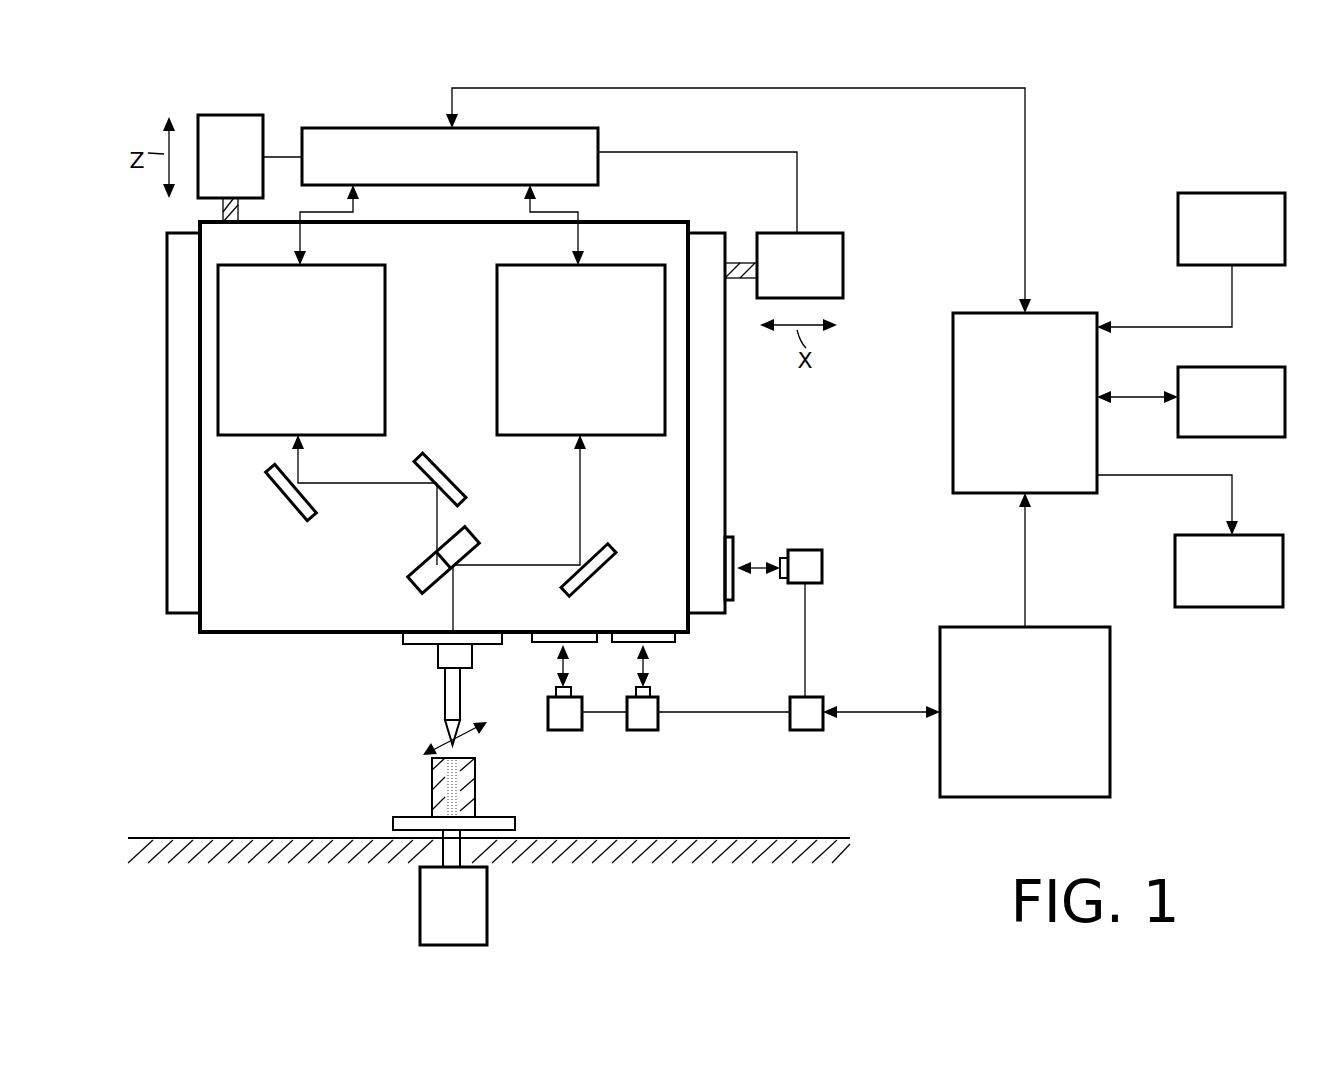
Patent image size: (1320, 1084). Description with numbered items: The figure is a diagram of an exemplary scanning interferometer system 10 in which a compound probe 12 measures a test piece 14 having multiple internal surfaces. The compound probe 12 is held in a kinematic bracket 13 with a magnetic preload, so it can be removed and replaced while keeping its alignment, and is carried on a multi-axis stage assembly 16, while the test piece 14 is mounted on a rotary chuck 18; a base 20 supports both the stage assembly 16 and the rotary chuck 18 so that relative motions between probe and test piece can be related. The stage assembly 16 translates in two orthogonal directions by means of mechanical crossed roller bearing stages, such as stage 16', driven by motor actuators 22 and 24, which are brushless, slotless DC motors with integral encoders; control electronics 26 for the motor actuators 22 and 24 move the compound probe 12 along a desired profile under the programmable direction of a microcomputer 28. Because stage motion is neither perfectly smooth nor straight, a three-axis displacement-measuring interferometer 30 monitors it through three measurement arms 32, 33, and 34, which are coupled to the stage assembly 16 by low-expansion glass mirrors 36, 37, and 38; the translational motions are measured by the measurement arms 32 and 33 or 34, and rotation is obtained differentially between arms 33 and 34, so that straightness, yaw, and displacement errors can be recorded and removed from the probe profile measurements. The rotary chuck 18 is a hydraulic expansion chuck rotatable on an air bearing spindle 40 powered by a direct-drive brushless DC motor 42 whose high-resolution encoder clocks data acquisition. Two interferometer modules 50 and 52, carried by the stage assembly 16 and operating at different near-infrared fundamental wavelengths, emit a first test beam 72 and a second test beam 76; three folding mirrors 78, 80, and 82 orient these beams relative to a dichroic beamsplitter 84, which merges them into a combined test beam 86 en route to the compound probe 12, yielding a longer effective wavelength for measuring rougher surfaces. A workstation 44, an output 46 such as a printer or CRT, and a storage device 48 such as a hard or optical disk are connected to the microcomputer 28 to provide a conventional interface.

The scanning interferometer system 10 is at (1145, 178).
The compound probe 12 is at (445, 703).
The kinematic bracket 13 is at (438, 660).
The test piece 14 is at (475, 790).
The multi-axis stage assembly 16 is at (444, 427).
The crossed roller bearing stage 16' is at (754, 423).
The rotary chuck 18 is at (393, 822).
The base 20 is at (255, 838).
The motor actuator 22 is at (785, 278).
The motor actuator 24 is at (215, 177).
The control electronics 26 is at (437, 169).
The microcomputer 28 is at (1005, 421).
The three-axis displacement-measuring interferometer 30 is at (1007, 724).
The measurement arm 32 is at (822, 570).
The measurement arm 33 is at (658, 727).
The measurement arm 34 is at (565, 730).
The mirror 36 is at (735, 590).
The mirror 37 is at (665, 643).
The mirror 38 is at (583, 645).
The air bearing spindle 40 is at (430, 856).
The direct-drive brushless DC motor 42 is at (438, 919).
The workstation 44 is at (1216, 245).
The output 46 is at (1214, 586).
The storage device 48 is at (1216, 417).
The interferometer module 50 is at (285, 364).
The interferometer module 52 is at (565, 364).
The first test beam 72 is at (300, 465).
The second test beam 76 is at (582, 483).
The folding mirror 78 is at (278, 490).
The folding mirror 80 is at (455, 483).
The folding mirror 82 is at (595, 575).
The dichroic beamsplitter 84 is at (423, 564).
The combined test beam 86 is at (453, 602).